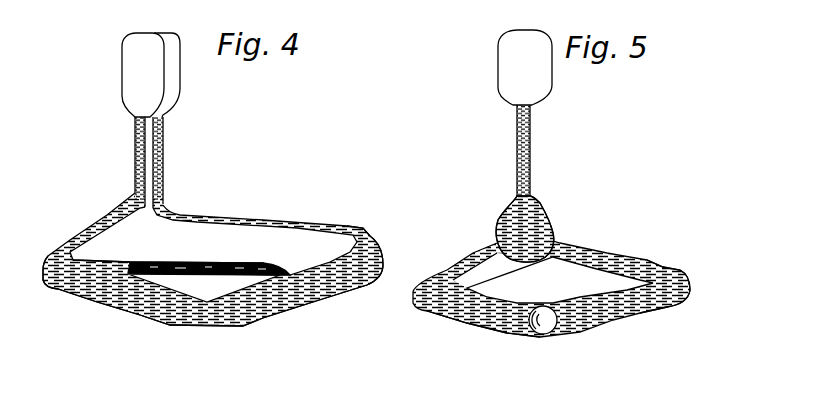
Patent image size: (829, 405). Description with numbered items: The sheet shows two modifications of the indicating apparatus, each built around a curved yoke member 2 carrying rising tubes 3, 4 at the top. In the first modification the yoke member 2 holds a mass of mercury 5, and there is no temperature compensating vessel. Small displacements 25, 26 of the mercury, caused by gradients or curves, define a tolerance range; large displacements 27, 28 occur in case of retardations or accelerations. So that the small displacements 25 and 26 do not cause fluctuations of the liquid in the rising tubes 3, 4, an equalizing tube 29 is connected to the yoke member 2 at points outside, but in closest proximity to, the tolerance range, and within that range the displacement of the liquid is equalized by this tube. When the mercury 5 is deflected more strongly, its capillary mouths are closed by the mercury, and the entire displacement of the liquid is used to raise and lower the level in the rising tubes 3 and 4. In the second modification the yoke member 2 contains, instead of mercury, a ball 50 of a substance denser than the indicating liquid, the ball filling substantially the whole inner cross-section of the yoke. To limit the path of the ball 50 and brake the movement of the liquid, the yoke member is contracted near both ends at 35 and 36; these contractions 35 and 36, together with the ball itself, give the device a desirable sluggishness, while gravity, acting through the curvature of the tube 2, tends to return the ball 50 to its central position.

In FIG. 4, the yoke member 2 is at (87, 266).
In FIG. 5, the yoke member 2 is at (457, 321).
In FIG. 4, the rising tube 3 is at (161, 156).
In FIG. 4, the rising tube 4 is at (135, 157).
In FIG. 4, the mass of mercury 5 is at (148, 314).
In FIG. 4, the small displacement 25 is at (92, 291).
In FIG. 4, the small displacement 26 is at (312, 286).
In FIG. 4, the large displacement 27 is at (57, 278).
In FIG. 4, the large displacement 28 is at (367, 258).
In FIG. 4, the equalizing tube 29 is at (218, 263).
In FIG. 5, the contraction 35 is at (468, 324).
In FIG. 5, the contraction 36 is at (643, 316).
In FIG. 5, the ball 50 is at (545, 324).